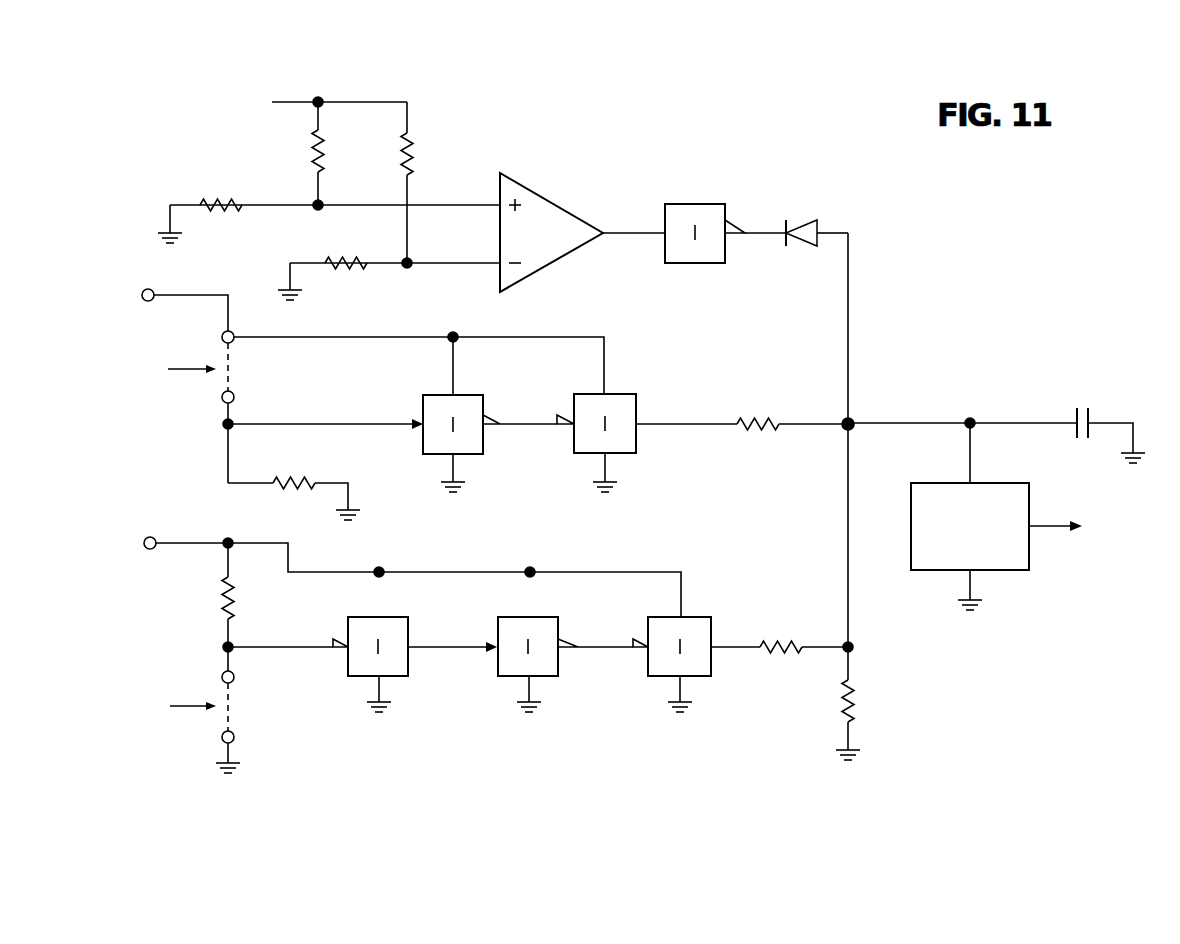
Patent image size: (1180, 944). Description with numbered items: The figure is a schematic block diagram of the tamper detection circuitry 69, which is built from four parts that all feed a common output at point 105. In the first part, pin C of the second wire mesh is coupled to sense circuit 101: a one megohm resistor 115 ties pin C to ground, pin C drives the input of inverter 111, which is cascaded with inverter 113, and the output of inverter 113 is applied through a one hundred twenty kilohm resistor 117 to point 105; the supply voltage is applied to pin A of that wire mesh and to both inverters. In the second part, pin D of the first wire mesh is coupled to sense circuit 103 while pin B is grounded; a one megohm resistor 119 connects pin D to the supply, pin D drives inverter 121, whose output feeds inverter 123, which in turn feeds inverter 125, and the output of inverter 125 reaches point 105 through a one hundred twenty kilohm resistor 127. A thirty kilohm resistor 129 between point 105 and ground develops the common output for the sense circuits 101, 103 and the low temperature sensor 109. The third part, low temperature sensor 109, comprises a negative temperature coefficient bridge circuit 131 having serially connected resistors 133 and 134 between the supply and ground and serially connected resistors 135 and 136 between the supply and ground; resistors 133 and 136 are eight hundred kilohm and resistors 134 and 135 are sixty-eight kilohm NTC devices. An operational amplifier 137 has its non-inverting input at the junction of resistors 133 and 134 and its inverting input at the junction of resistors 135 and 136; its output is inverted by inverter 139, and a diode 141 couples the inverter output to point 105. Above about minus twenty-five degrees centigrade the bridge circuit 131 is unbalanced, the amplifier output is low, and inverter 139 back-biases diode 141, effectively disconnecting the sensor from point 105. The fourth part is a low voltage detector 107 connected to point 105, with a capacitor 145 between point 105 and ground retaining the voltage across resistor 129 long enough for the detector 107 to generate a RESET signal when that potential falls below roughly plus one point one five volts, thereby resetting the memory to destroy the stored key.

The negative temperature coefficient bridge circuit 131 is at (178, 136).
The resistor 133 is at (323, 167).
The resistor 134 is at (202, 200).
The resistor 135 is at (406, 140).
The resistor 136 is at (338, 270).
The operational amplifier 137 is at (545, 208).
The inverter 139 is at (703, 256).
The diode 141 is at (810, 250).
The low temperature sensor 109 is at (650, 116).
The tamper detection circuitry 69 is at (870, 213).
The sense circuit 101 is at (648, 370).
The inverter 111 is at (438, 398).
The inverter 113 is at (588, 398).
The resistor 115 is at (272, 488).
The resistor 117 is at (758, 434).
The point 105 is at (853, 418).
The capacitor 145 is at (1072, 414).
The low voltage detector 107 is at (985, 487).
The sense circuit 103 is at (642, 550).
The resistor 119 is at (237, 606).
The inverter 121 is at (392, 622).
The inverter 123 is at (542, 622).
The inverter 125 is at (655, 662).
The resistor 127 is at (775, 662).
The resistor 129 is at (855, 692).